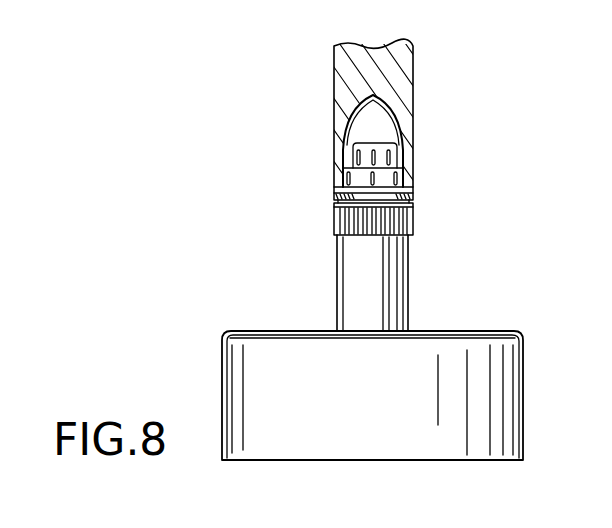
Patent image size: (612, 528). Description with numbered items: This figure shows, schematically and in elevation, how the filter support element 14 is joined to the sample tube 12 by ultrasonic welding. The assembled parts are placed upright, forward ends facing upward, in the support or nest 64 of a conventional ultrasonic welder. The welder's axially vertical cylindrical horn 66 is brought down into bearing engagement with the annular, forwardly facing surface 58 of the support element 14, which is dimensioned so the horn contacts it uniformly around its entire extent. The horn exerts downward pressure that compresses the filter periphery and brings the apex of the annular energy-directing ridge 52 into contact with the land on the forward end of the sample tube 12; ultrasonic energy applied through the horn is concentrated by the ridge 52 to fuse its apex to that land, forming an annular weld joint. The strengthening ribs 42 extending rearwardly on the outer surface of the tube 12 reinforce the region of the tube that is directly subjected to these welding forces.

The cylindrical horn 66 is at (338, 72).
The filter support element 14 is at (398, 163).
The annular forwardly facing surface 58 is at (339, 185).
The annular energy-directing ridge 52 is at (413, 198).
The strengthening ribs 42 is at (347, 218).
The sample tube 12 is at (408, 287).
The support or nest 64 is at (338, 440).